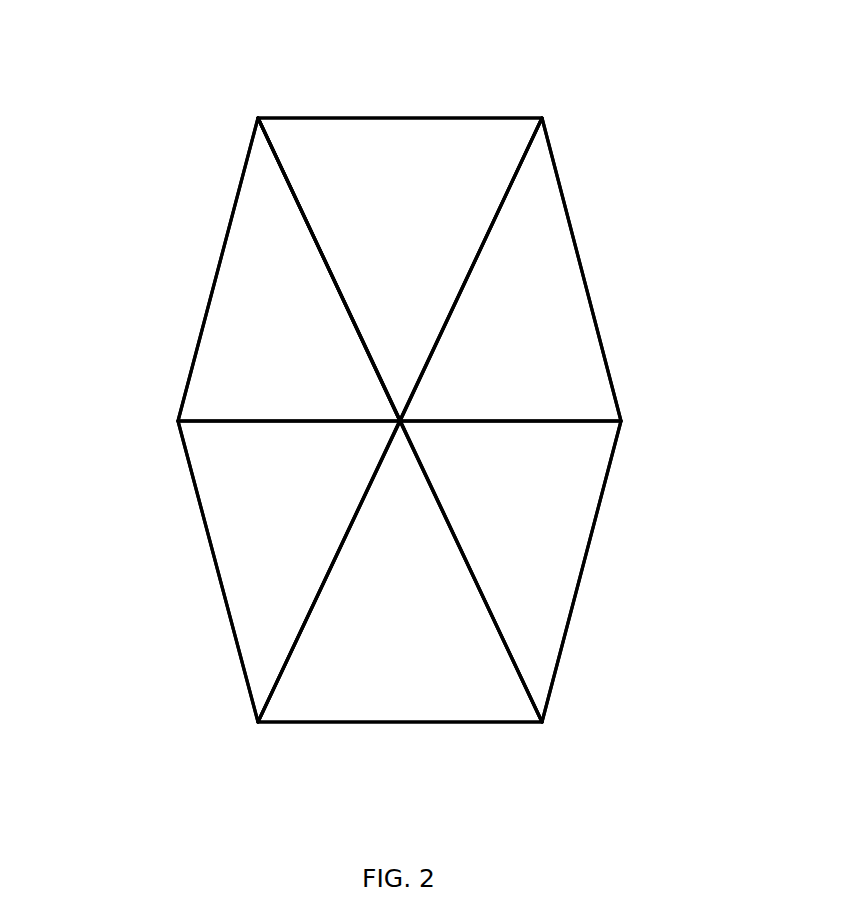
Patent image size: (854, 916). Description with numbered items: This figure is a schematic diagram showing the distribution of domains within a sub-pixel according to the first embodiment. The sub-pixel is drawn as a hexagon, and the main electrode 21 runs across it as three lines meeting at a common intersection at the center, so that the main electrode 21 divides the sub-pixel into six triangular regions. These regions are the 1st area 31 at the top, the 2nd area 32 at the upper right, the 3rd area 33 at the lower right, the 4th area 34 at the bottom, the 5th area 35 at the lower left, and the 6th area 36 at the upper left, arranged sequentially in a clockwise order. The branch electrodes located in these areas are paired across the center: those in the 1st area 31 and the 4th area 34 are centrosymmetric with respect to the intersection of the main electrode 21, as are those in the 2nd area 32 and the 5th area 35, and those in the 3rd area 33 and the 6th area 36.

The main electrode 21 is at (280, 163).
The 1st area 31 is at (408, 180).
The 2nd area 32 is at (562, 310).
The 3rd area 33 is at (560, 525).
The 4th area 34 is at (413, 670).
The 5th area 35 is at (232, 515).
The 6th area 36 is at (253, 313).